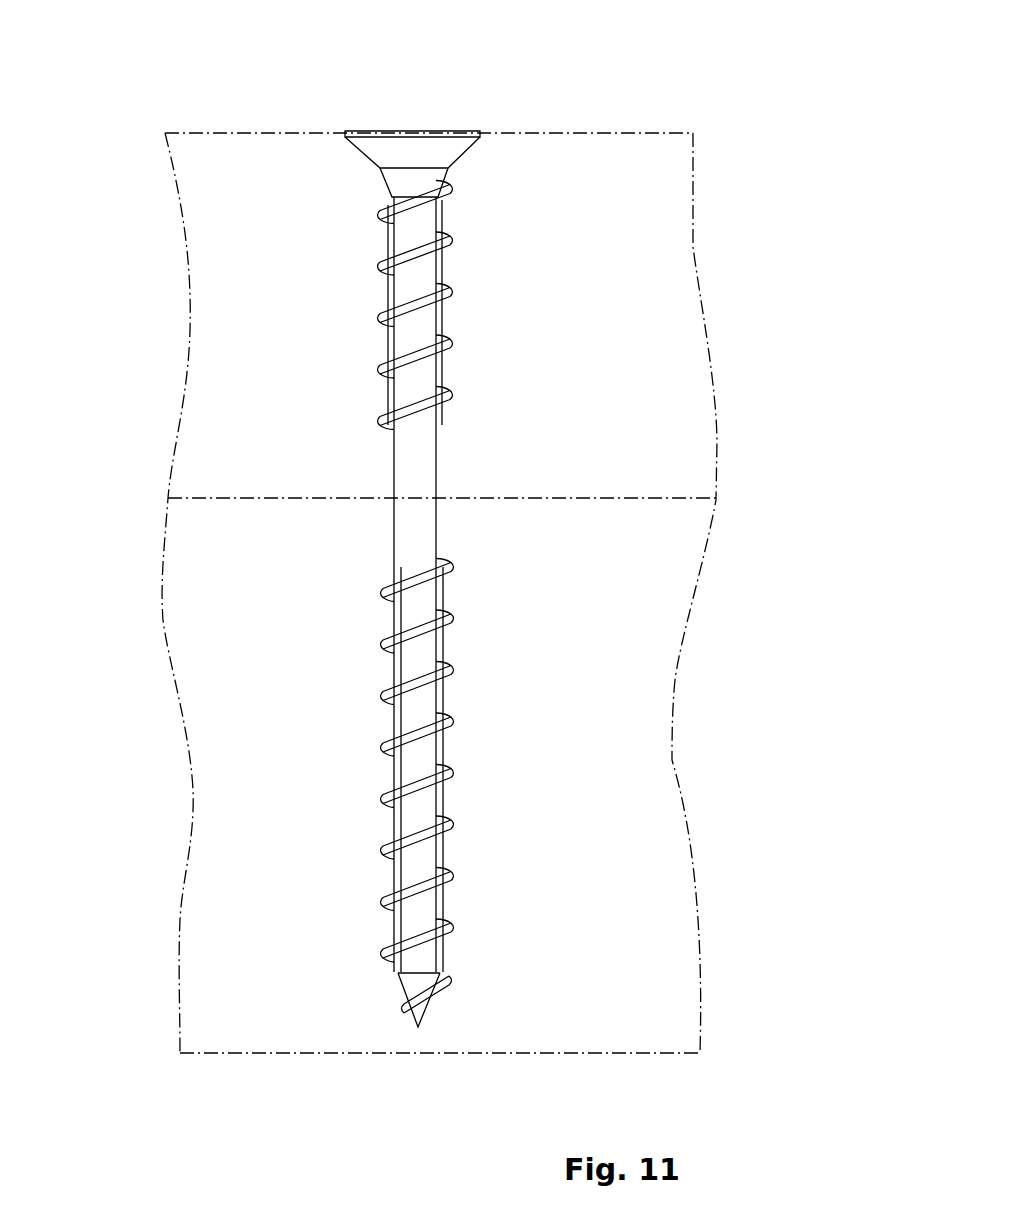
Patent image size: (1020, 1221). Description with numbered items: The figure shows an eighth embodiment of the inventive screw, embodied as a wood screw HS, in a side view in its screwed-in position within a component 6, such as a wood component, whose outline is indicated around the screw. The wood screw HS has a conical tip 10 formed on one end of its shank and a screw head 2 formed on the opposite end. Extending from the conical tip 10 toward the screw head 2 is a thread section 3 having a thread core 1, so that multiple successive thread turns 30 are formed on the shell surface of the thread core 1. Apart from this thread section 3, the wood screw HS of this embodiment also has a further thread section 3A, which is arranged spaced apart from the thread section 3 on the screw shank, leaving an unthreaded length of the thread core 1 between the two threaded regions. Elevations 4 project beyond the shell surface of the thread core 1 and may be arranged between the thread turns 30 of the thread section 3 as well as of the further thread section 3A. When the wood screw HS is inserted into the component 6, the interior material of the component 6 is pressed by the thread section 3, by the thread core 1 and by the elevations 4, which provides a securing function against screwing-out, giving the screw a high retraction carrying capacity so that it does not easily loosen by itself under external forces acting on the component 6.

The thread core 1 is at (428, 218).
The screw head 2 is at (410, 143).
The thread section 3 is at (385, 872).
The further thread section 3A is at (362, 308).
The elevations 4 is at (448, 370).
The component 6 is at (560, 155).
The conical tip 10 is at (425, 1005).
The thread turns 30 is at (402, 576).
The wood screw HS is at (382, 730).